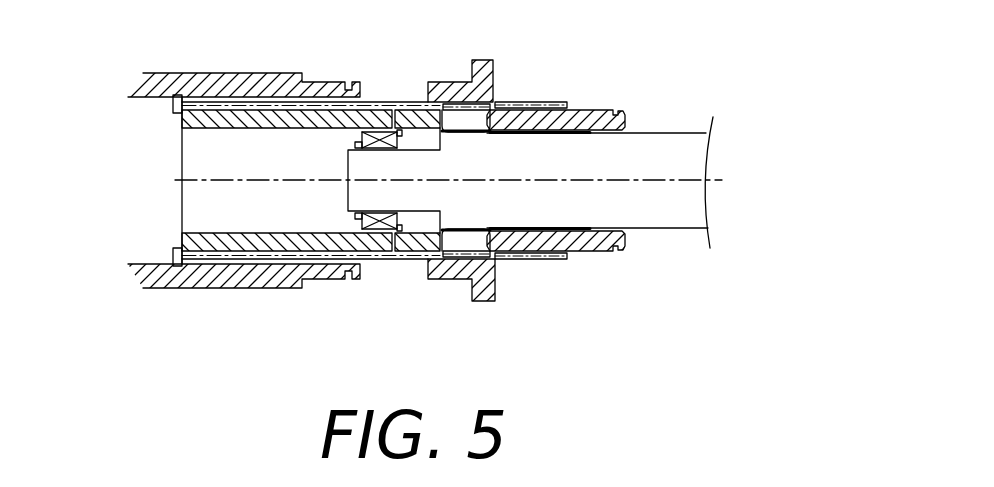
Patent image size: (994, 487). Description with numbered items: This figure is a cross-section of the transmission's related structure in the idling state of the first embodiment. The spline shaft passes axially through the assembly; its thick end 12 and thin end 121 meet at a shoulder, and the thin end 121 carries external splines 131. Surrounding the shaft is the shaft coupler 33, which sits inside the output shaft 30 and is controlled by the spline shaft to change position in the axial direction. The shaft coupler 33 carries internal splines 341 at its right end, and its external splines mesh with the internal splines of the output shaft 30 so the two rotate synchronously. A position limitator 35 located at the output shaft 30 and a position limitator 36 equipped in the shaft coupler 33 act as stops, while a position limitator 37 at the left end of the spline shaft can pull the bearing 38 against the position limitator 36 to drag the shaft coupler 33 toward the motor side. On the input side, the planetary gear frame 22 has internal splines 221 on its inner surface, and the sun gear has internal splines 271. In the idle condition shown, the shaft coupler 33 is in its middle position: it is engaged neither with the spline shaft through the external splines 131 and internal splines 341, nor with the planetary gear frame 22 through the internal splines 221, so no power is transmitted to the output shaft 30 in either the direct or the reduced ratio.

The thick end 12 is at (660, 218).
The planetary gear frame 22 is at (462, 283).
The output shaft 30 is at (212, 75).
The shaft coupler 33 is at (195, 130).
The position limitator 35 is at (173, 105).
The position limitator 36 is at (397, 130).
The position limitator 37 is at (355, 215).
The bearing 38 is at (362, 139).
The thin end 121 is at (412, 197).
The external splines 131 is at (462, 133).
The internal splines 221 is at (450, 82).
The internal splines 271 is at (548, 133).
The internal splines 341 is at (413, 235).